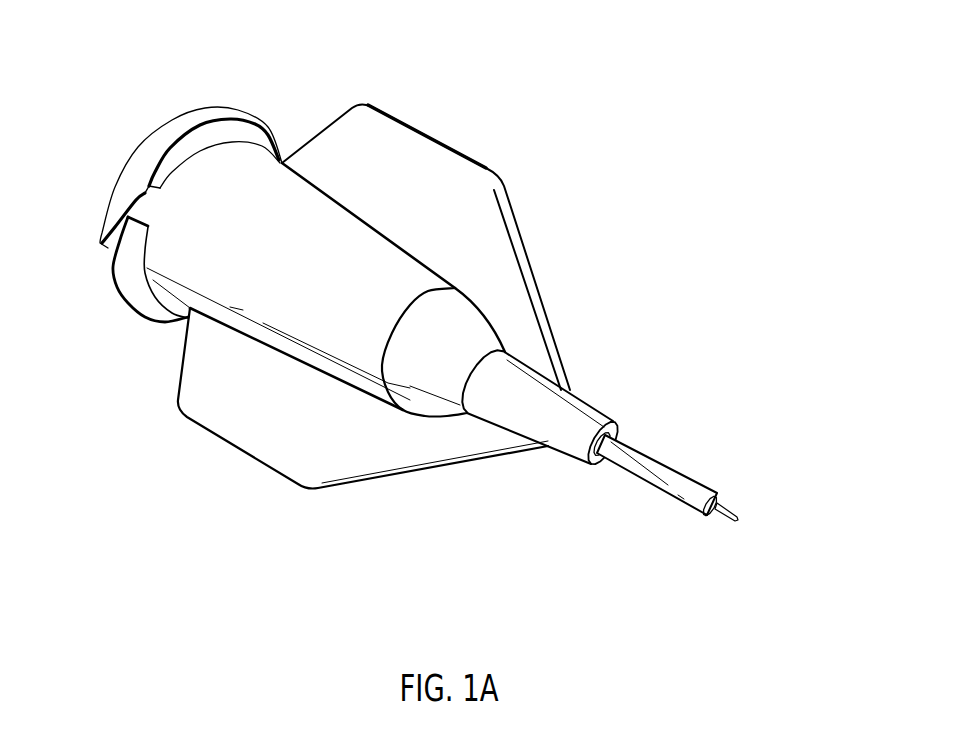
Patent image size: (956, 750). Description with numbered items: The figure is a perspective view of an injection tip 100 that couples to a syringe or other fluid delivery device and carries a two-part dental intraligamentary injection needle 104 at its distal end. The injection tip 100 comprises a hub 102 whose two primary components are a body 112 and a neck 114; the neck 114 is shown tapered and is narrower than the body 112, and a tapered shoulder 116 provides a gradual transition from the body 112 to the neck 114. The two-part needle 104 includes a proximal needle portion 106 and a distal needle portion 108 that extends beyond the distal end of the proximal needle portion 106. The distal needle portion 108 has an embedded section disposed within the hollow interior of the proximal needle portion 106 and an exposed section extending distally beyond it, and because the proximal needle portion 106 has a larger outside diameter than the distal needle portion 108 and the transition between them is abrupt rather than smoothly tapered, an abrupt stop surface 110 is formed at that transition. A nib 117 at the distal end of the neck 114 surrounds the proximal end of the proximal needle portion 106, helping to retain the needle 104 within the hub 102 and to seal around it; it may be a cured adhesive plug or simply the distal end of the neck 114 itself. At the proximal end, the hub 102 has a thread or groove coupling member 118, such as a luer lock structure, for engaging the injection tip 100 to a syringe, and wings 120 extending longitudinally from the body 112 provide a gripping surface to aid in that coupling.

The injection tip 100 is at (445, 323).
The hub 102 is at (415, 291).
The two-part needle 104 is at (672, 514).
The proximal needle portion 106 is at (655, 487).
The distal needle portion 108 is at (722, 519).
The abrupt stop surface 110 is at (706, 518).
The body 112 is at (218, 272).
The neck 114 is at (590, 443).
The tapered shoulder 116 is at (365, 303).
The nib 117 is at (618, 430).
The coupling member 118 is at (183, 121).
The wings 120 is at (430, 162).